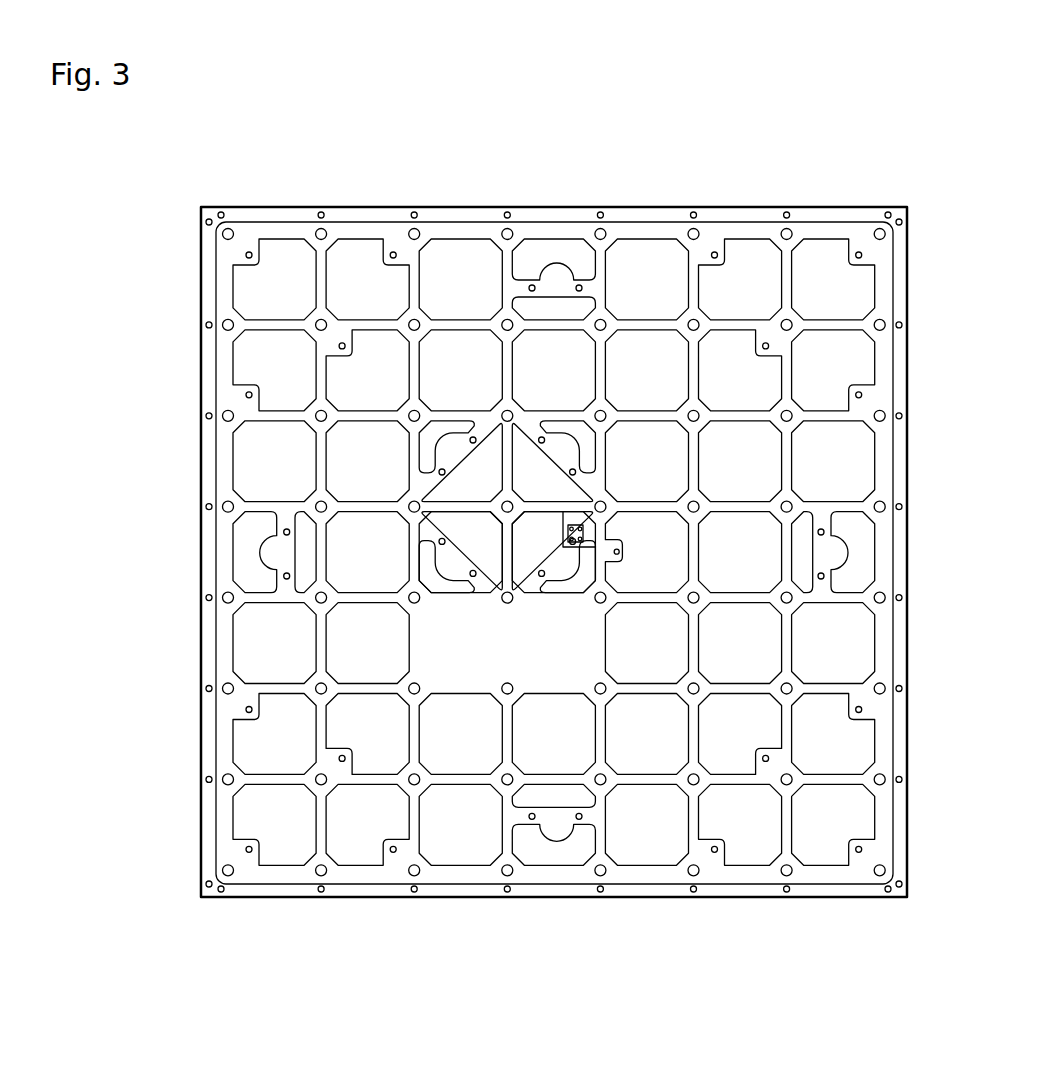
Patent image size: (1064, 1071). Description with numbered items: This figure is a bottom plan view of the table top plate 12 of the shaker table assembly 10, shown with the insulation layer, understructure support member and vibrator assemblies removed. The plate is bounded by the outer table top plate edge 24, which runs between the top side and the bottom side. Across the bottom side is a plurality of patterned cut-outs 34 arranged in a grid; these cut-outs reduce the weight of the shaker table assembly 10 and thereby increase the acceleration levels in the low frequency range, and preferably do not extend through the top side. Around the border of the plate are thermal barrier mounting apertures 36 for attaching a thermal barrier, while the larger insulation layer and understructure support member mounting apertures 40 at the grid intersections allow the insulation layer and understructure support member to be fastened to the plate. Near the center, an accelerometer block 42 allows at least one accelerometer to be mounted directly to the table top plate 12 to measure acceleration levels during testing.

The shaker table assembly 10 is at (580, 507).
The table top plate 12 is at (910, 340).
The outer table top plate edge 24 is at (907, 513).
The patterned cut-outs 34 is at (745, 368).
The thermal barrier mounting apertures 36 is at (603, 213).
The insulation layer and understructure support member mounting apertures 40 is at (504, 410).
The accelerometer block 42 is at (574, 535).